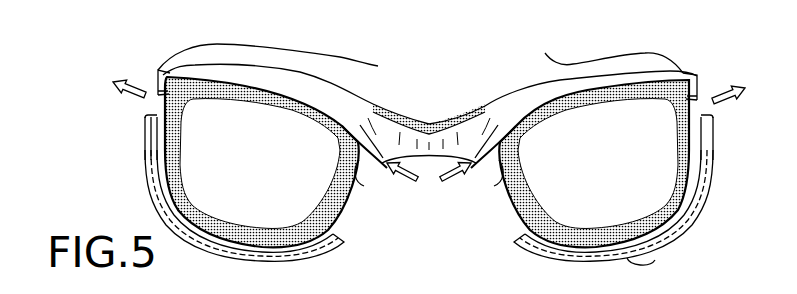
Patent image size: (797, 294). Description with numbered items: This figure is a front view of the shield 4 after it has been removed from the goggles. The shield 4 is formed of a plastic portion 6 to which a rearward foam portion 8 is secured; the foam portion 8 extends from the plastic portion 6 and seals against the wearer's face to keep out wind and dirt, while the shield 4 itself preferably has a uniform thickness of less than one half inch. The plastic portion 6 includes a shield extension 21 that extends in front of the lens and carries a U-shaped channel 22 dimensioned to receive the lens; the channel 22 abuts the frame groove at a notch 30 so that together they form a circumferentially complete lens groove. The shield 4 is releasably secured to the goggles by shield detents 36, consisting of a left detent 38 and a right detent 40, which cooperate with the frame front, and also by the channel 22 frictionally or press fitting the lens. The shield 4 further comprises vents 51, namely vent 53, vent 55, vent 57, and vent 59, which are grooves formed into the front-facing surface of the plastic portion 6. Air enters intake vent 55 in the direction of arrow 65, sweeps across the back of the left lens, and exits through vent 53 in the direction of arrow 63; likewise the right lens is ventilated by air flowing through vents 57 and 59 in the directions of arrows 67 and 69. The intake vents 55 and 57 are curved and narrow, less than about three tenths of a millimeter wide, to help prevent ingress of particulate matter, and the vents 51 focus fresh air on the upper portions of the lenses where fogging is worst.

The shield 4 is at (84, 91).
The plastic portion 6 is at (353, 96).
The foam portion 8 is at (513, 166).
The shield extension 21 is at (685, 253).
The U-shaped channel 22 is at (148, 182).
The notch 30 is at (150, 117).
The shield detents 36 is at (466, 238).
The left detent 38 is at (361, 188).
The right detent 40 is at (481, 188).
The vents 51 is at (557, 33).
The vent 53 is at (280, 57).
The vent 55 is at (398, 115).
The vent 57 is at (487, 130).
The vent 59 is at (602, 54).
The arrow 63 is at (129, 78).
The arrow 65 is at (406, 182).
The arrow 67 is at (451, 182).
The arrow 69 is at (729, 80).